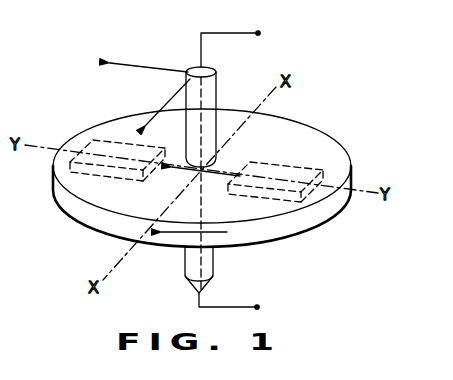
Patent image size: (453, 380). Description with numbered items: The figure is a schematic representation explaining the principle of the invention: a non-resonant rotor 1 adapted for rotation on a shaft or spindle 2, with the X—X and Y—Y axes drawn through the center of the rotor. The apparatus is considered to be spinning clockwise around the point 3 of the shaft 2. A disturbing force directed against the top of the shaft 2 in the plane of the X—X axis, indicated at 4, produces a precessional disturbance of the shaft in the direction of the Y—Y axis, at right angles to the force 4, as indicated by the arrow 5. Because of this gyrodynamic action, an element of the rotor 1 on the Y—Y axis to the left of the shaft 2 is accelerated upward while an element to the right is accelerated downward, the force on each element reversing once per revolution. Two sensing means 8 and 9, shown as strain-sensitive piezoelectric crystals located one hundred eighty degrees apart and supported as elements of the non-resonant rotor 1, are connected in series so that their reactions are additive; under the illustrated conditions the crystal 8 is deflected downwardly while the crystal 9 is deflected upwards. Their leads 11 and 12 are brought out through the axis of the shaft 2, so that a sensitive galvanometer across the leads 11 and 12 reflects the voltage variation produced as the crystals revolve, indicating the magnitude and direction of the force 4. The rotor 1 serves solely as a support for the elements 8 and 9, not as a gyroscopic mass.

The non-resonant rotor 1 is at (309, 219).
The shaft 2 is at (218, 92).
The point of the shaft 3 is at (213, 283).
The force 4 is at (167, 104).
The arrow 5 is at (165, 66).
The sensing means 8 is at (113, 141).
The sensing means 9 is at (293, 162).
The lead 11 is at (238, 34).
The lead 12 is at (248, 304).